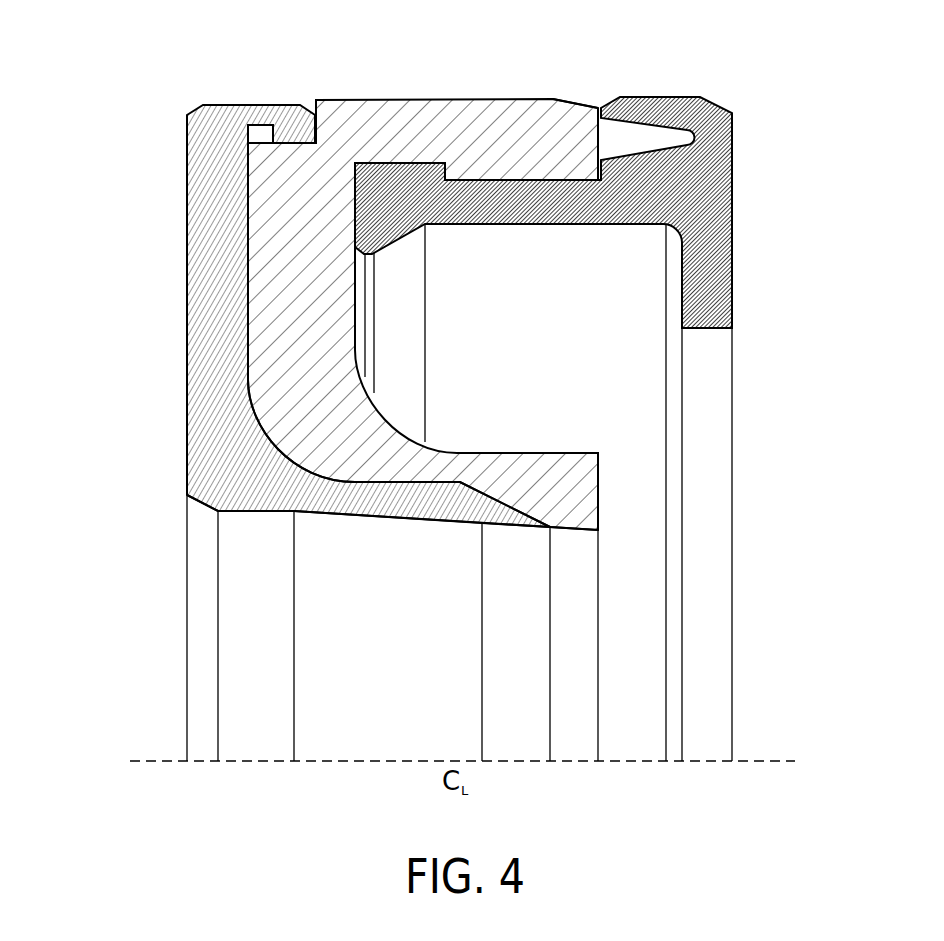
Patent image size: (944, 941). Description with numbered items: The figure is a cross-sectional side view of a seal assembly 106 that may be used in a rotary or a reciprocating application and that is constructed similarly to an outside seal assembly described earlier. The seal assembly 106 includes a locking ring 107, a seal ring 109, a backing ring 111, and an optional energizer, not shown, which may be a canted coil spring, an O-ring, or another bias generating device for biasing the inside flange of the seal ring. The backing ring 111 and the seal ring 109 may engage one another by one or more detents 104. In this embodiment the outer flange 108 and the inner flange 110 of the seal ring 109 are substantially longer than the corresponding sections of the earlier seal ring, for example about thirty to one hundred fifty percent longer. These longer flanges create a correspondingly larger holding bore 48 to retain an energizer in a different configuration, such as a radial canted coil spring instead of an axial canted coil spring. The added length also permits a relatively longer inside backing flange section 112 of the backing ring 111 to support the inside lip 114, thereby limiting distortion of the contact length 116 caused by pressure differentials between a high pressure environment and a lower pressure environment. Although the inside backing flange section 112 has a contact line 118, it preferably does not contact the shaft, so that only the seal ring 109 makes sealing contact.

The holding bore 48 is at (640, 395).
The detent 104 is at (293, 120).
The seal assembly 106 is at (117, 250).
The locking ring 107 is at (737, 197).
The outer flange 108 is at (547, 97).
The seal ring 109 is at (444, 138).
The inner flange 110 is at (292, 413).
The backing ring 111 is at (338, 518).
The inside backing flange section 112 is at (235, 478).
The inside lip 114 is at (583, 503).
The contact length 116 is at (568, 530).
The contact line 118 is at (518, 530).